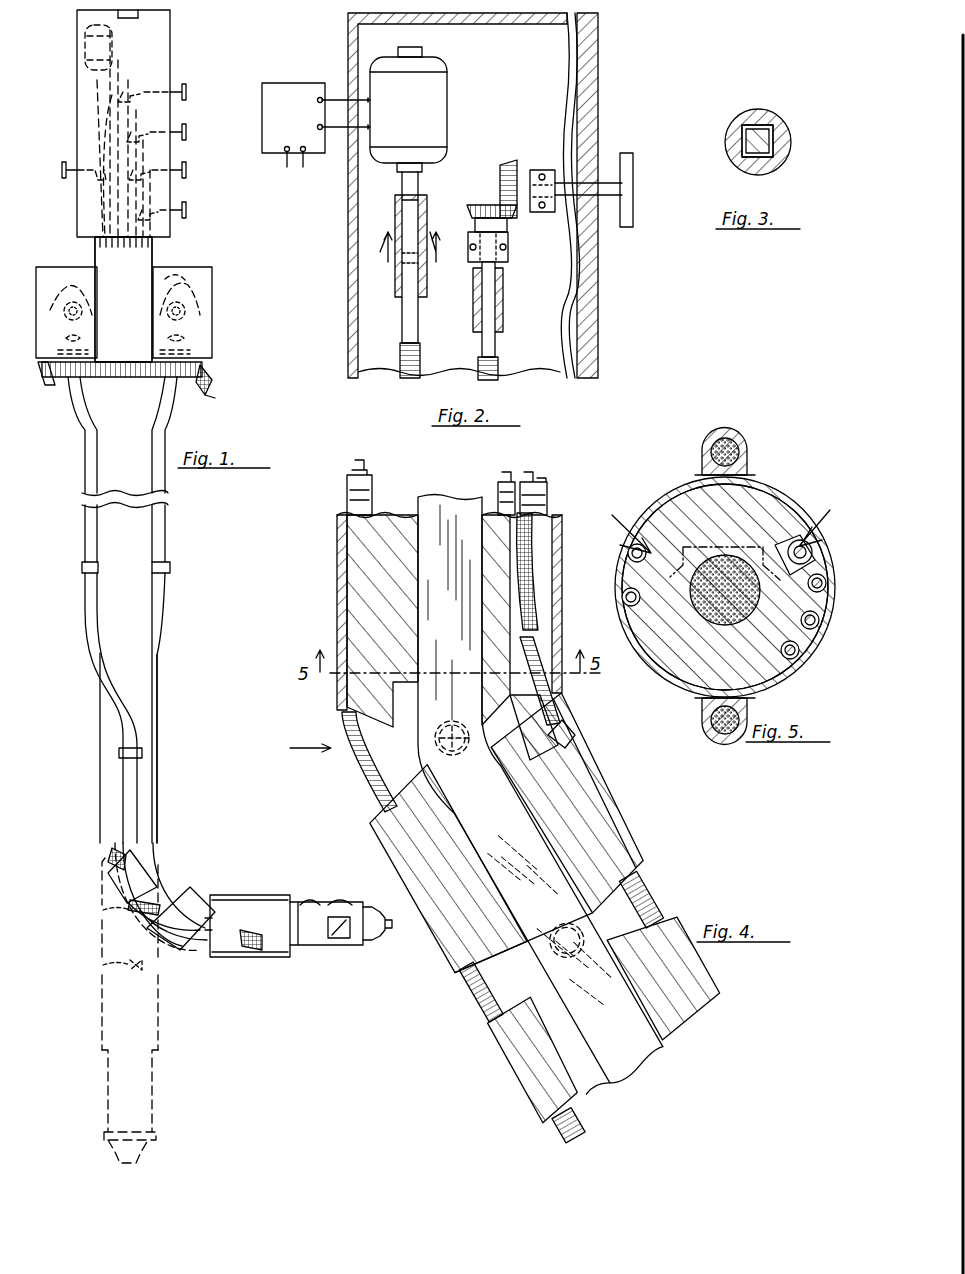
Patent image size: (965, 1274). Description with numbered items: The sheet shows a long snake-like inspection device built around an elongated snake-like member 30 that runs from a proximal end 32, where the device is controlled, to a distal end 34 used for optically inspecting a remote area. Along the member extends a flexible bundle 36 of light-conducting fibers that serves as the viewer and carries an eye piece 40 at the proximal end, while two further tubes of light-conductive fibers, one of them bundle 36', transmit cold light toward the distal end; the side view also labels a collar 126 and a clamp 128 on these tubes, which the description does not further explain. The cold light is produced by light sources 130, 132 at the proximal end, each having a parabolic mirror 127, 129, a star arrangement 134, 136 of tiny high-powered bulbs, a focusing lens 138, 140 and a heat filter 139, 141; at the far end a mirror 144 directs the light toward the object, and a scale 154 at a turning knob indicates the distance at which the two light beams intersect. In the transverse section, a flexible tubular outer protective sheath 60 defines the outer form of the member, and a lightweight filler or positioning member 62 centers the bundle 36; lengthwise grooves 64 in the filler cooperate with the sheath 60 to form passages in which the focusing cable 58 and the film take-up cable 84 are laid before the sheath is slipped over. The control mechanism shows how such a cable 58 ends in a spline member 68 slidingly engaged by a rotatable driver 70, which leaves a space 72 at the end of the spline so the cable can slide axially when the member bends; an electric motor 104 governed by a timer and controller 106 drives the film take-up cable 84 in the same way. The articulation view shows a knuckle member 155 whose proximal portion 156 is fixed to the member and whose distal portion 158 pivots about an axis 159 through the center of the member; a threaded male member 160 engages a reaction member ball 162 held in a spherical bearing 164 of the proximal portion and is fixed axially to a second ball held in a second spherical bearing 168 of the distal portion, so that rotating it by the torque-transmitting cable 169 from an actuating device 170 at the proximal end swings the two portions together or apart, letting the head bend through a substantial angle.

In FIG. 1, the snake-like member 30 is at (168, 733).
In FIG. 1, the proximal end 32 is at (188, 237).
In FIG. 1, the distal end 34 is at (317, 887).
In FIG. 4, the flexible bundle of light-conducting fibers 36 is at (459, 635).
In FIG. 5, the flexible bundle of light-conducting fibers 36 is at (706, 643).
In FIG. 1, the light-conductive fiber bundle tube 36' is at (181, 708).
In FIG. 1, the eye piece 40 is at (143, 20).
In FIG. 2, the flexible torque-transmitting cable 58 is at (500, 372).
In FIG. 4, the flexible torque-transmitting cable 58 is at (568, 1125).
In FIG. 5, the flexible torque-transmitting cable 58 is at (765, 638).
In FIG. 5, the flexible tubular outer protective sheath 60 is at (760, 482).
In FIG. 5, the filler or positioning member 62 is at (683, 500).
In FIG. 5, the lengthwise grooves 64 is at (648, 520).
In FIG. 2, the spline member 68 is at (492, 342).
In FIG. 3, the spline member 68 is at (774, 140).
In FIG. 2, the rotatable driver 70 is at (497, 310).
In FIG. 3, the rotatable driver 70 is at (758, 118).
In FIG. 2, the space 72 is at (507, 265).
In FIG. 2, the film take-up cable 84 is at (410, 372).
In FIG. 5, the film take-up cable 84 is at (619, 554).
In FIG. 1, the electric motor 104 is at (74, 60).
In FIG. 2, the electric motor 104 is at (438, 118).
In FIG. 2, the timer and controller 106 is at (307, 90).
In FIG. 1, the collar 126 is at (137, 700).
In FIG. 1, the parabolic mirror 127 is at (123, 299).
In FIG. 1, the tube clamp 128 is at (166, 552).
In FIG. 1, the parabolic mirror 129 is at (208, 270).
In FIG. 1, the light source 130 is at (185, 277).
In FIG. 1, the light source 132 is at (59, 268).
In FIG. 1, the star arrangement of light bulbs 134 is at (83, 314).
In FIG. 1, the star arrangement of light bulbs 136 is at (186, 314).
In FIG. 1, the focusing lens 138 is at (86, 340).
In FIG. 1, the heat filter 139 is at (120, 435).
In FIG. 1, the focusing lens 140 is at (186, 340).
In FIG. 1, the heat filter 141 is at (192, 352).
In FIG. 1, the mirror 144 is at (343, 938).
In FIG. 1, the scale 154 is at (221, 383).
In FIG. 1, the knuckle member 155 is at (94, 856).
In FIG. 4, the knuckle member 155 is at (305, 749).
In FIG. 1, the proximal portion 156 is at (147, 850).
In FIG. 4, the proximal portion 156 is at (352, 735).
In FIG. 1, the distal portion 158 is at (168, 860).
In FIG. 4, the distal portion 158 is at (420, 790).
In FIG. 1, the axis 159 is at (162, 900).
In FIG. 4, the axis 159 is at (436, 742).
In FIG. 4, the threaded male member 160 is at (537, 655).
In FIG. 4, the reaction member ball 162 is at (560, 695).
In FIG. 4, the spherical bearing 164 is at (566, 720).
In FIG. 4, the second spherical bearing 168 is at (575, 752).
In FIG. 4, the flexible torque-transmitting cable 169 is at (530, 605).
In FIG. 1, the actuating device 170 is at (183, 108).